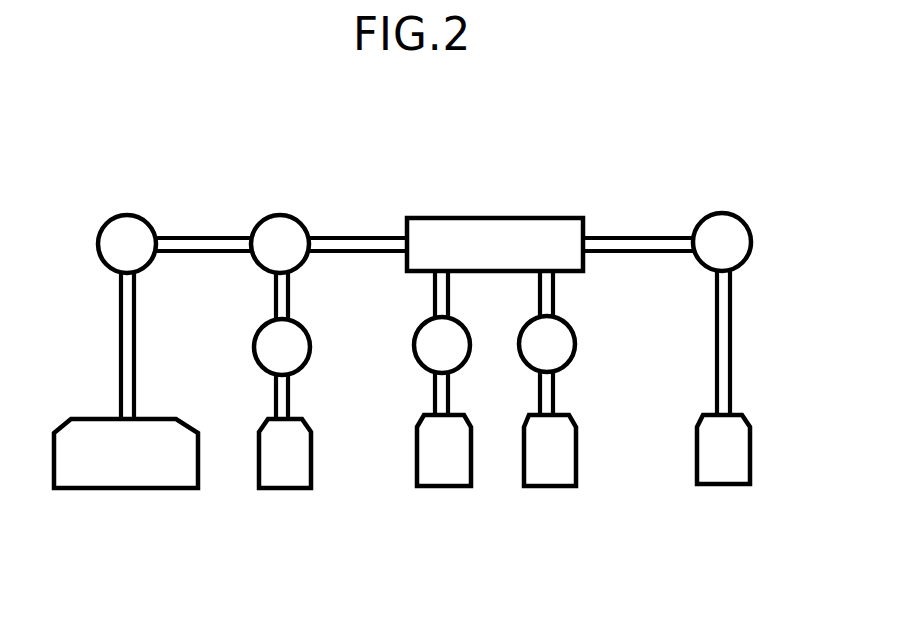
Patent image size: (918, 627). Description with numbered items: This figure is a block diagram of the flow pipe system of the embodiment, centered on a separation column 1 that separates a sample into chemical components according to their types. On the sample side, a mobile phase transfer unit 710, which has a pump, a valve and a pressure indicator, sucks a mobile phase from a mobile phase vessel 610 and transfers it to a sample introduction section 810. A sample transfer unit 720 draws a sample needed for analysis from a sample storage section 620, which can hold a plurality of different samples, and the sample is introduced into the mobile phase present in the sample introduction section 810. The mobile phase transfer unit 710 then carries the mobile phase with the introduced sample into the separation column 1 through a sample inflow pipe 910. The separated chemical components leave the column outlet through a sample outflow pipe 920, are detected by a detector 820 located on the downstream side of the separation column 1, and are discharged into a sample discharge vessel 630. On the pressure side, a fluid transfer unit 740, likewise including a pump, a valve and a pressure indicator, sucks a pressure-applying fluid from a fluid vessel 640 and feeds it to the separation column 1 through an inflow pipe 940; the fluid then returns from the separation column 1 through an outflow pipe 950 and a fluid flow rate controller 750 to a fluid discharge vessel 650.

The separation column 1 is at (485, 217).
The sample inflow pipe 910 is at (384, 238).
The sample outflow pipe 920 is at (603, 234).
The inflow pipe 940 is at (441, 290).
The outflow pipe 950 is at (548, 284).
The sample transfer unit 720 is at (125, 236).
The sample introduction section 810 is at (278, 231).
The detector 820 is at (736, 238).
The mobile phase transfer unit 710 is at (305, 362).
The fluid transfer unit 740 is at (430, 364).
The fluid flow rate controller 750 is at (558, 350).
The sample storage section 620 is at (112, 478).
The mobile phase vessel 610 is at (263, 480).
The fluid vessel 640 is at (447, 484).
The fluid discharge vessel 650 is at (553, 482).
The sample discharge vessel 630 is at (730, 474).